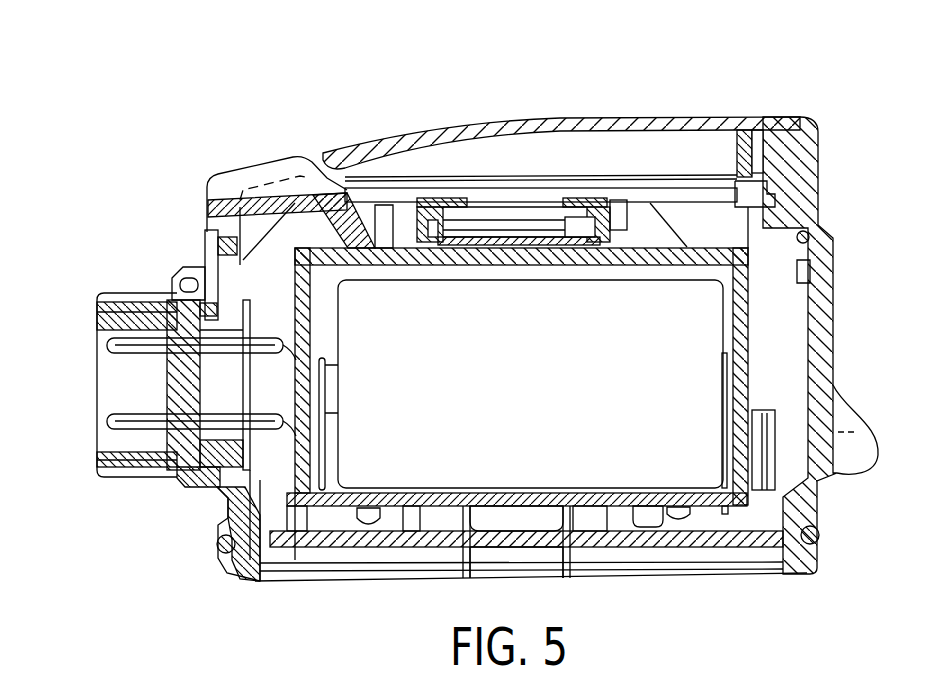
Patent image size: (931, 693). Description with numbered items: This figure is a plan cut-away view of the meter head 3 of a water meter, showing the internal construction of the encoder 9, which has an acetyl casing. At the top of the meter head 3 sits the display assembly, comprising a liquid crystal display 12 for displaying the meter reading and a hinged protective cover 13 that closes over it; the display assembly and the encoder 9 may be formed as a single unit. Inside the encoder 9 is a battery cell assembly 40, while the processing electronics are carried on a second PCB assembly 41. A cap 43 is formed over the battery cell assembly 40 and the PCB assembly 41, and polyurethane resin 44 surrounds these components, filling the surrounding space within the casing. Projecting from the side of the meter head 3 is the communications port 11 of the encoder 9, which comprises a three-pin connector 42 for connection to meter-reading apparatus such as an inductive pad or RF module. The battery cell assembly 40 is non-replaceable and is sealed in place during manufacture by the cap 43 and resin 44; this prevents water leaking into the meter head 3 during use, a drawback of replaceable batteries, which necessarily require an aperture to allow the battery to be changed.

The meter head 3 is at (175, 148).
The encoder 9 is at (170, 277).
The communications port 11 is at (117, 470).
The liquid crystal display 12 is at (490, 207).
The hinged protective cover 13 is at (622, 112).
The battery cell assembly 40 is at (425, 473).
The second PCB assembly 41 is at (570, 493).
The 3-pin connector 42 is at (157, 402).
The cap 43 is at (743, 432).
The polyurethane resin 44 is at (270, 493).